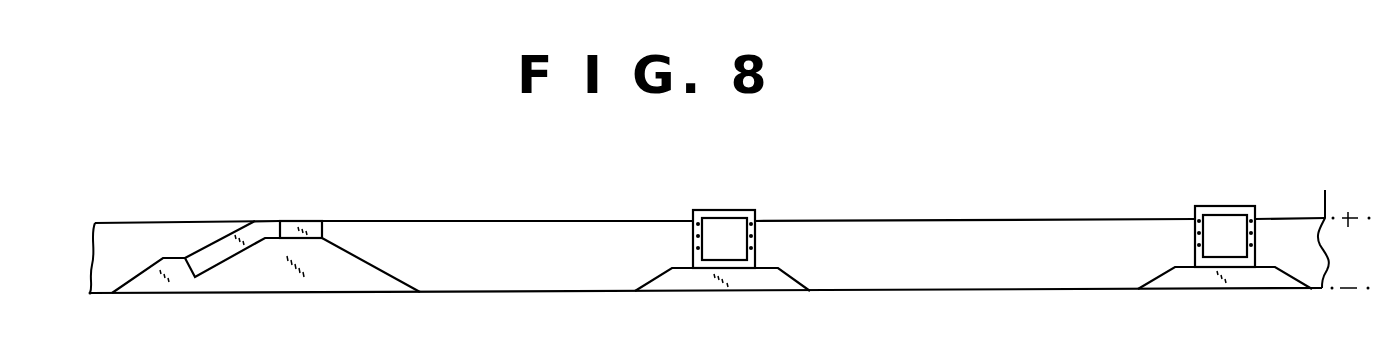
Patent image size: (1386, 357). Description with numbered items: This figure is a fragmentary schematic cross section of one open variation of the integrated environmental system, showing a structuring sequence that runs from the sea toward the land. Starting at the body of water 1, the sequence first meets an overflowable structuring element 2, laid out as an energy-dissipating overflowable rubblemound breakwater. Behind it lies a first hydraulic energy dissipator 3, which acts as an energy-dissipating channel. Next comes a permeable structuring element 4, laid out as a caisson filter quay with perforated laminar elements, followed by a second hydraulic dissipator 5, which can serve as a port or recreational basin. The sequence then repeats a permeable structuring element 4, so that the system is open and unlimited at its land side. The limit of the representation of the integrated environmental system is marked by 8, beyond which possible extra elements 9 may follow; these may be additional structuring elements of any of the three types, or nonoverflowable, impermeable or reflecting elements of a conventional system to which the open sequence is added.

The body of water 1 is at (173, 222).
The overflowable structuring element 2 is at (305, 219).
The first hydraulic energy dissipator 3 is at (517, 221).
The permeable structuring element 4 is at (729, 211).
The second hydraulic dissipator 5 is at (992, 220).
The limit of the representation 8 is at (1325, 200).
The extra elements 9 is at (1350, 203).